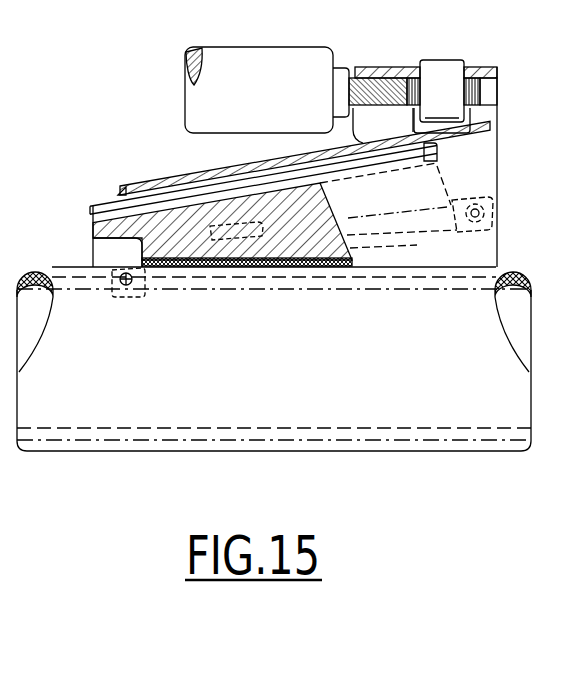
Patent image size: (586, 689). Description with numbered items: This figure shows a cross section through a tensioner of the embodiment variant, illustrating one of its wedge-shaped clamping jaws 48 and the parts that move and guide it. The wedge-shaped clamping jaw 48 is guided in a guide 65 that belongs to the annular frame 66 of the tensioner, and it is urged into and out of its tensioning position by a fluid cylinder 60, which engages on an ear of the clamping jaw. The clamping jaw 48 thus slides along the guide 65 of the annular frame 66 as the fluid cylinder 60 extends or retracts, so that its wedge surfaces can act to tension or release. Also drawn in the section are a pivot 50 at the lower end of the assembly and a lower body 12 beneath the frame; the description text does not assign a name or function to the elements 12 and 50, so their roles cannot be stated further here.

The roller body 12 is at (533, 281).
The wedge-shaped clamping jaw 48 is at (161, 232).
The pivot 50 is at (198, 268).
The fluid cylinder 60 is at (452, 198).
The guide 65 is at (437, 152).
The annular frame 66 is at (497, 127).